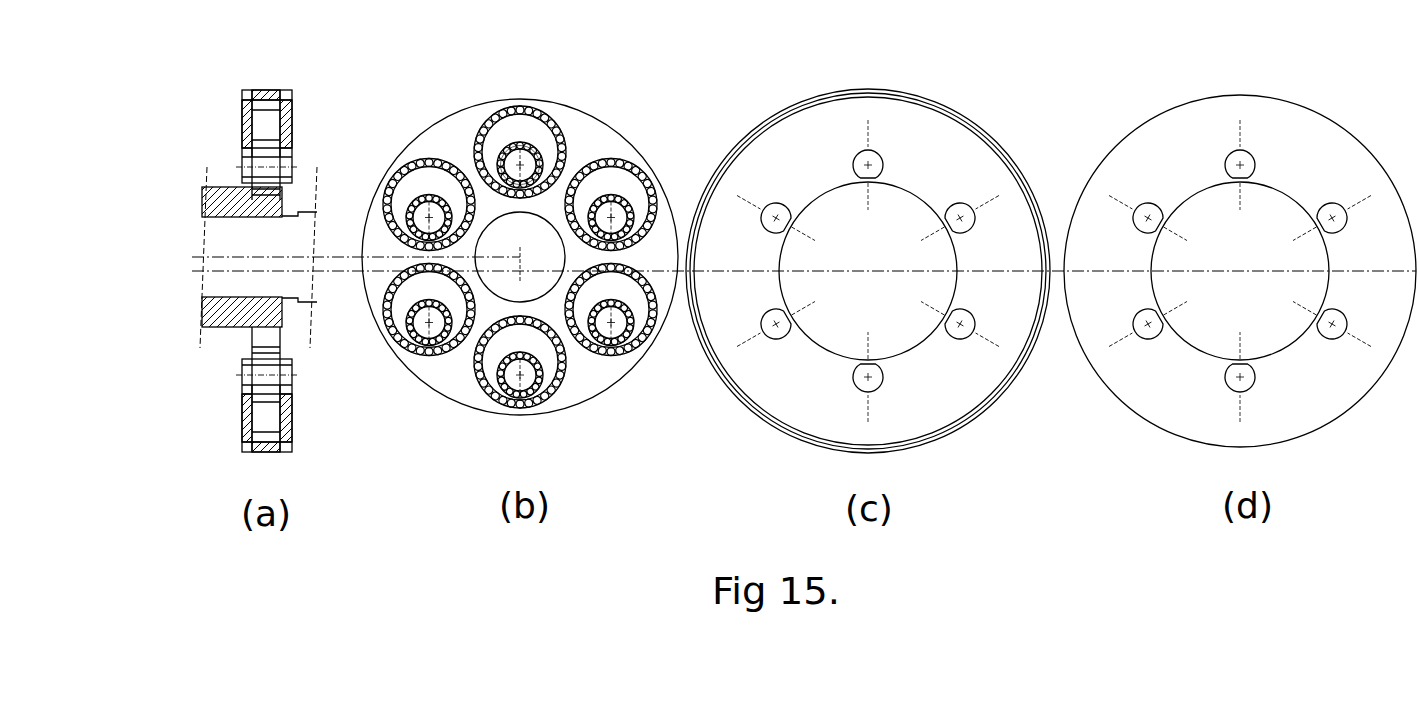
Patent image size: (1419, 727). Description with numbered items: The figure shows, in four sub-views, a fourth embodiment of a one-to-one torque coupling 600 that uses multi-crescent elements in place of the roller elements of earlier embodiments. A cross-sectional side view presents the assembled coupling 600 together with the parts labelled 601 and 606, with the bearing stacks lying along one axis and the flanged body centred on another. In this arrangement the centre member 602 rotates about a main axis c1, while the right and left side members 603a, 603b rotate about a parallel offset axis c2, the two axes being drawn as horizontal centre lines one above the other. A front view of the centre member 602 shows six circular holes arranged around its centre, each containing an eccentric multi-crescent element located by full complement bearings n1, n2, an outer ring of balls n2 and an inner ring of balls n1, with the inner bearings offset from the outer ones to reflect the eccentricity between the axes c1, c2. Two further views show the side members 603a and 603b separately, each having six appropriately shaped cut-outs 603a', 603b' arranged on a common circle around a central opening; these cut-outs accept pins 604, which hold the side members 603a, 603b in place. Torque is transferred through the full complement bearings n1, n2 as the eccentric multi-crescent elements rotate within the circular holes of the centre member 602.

The one-to-one torque coupling 600 is at (493, 102).
The flange 601 is at (222, 192).
The centre member 602 is at (242, 100).
The right side member 603a is at (789, 271).
The retaining plate hole 603a' is at (1240, 248).
The left side member 603b is at (653, 254).
The retaining ring plate hole 603b' is at (868, 248).
The pins 604 is at (250, 158).
The inner bearing 606 is at (502, 129).
The full complement bearing n1 is at (505, 147).
The full complement bearing n2 is at (490, 118).
The main axis c1 is at (346, 257).
The parallel offset axis c2 is at (794, 272).